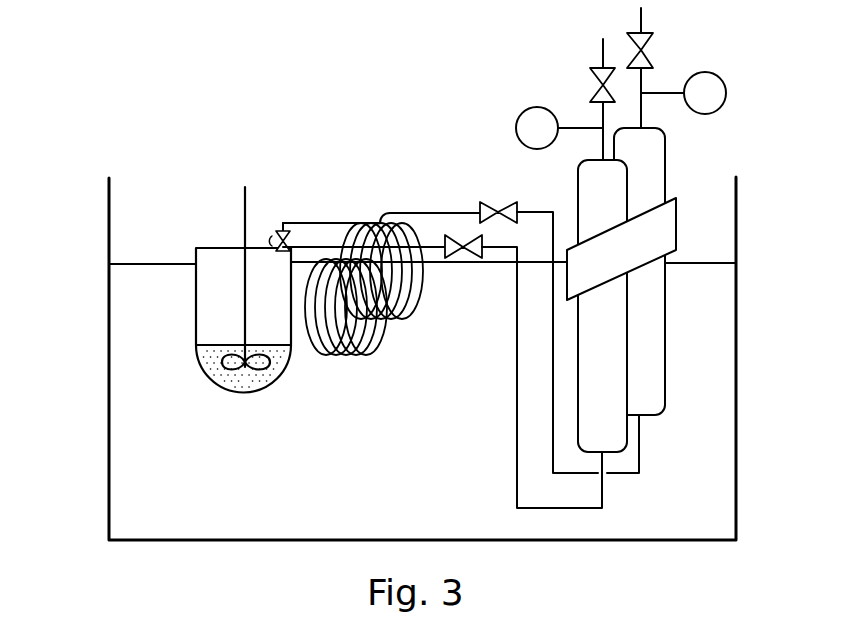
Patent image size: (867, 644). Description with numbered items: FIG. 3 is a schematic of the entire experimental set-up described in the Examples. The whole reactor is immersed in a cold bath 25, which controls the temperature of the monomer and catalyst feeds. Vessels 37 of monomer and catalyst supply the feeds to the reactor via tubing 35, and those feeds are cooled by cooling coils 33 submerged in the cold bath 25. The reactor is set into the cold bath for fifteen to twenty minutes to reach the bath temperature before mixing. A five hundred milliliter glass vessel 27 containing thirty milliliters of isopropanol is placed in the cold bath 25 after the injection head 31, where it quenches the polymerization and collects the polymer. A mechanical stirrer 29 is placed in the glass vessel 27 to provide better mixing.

The cold bath 25 is at (125, 498).
The glass vessel 27 is at (196, 300).
The mechanical stirrer 29 is at (222, 368).
The injection head 31 is at (283, 228).
The cooling coils 33 is at (370, 222).
The tubing 35 is at (517, 420).
The vessels 37 is at (666, 353).